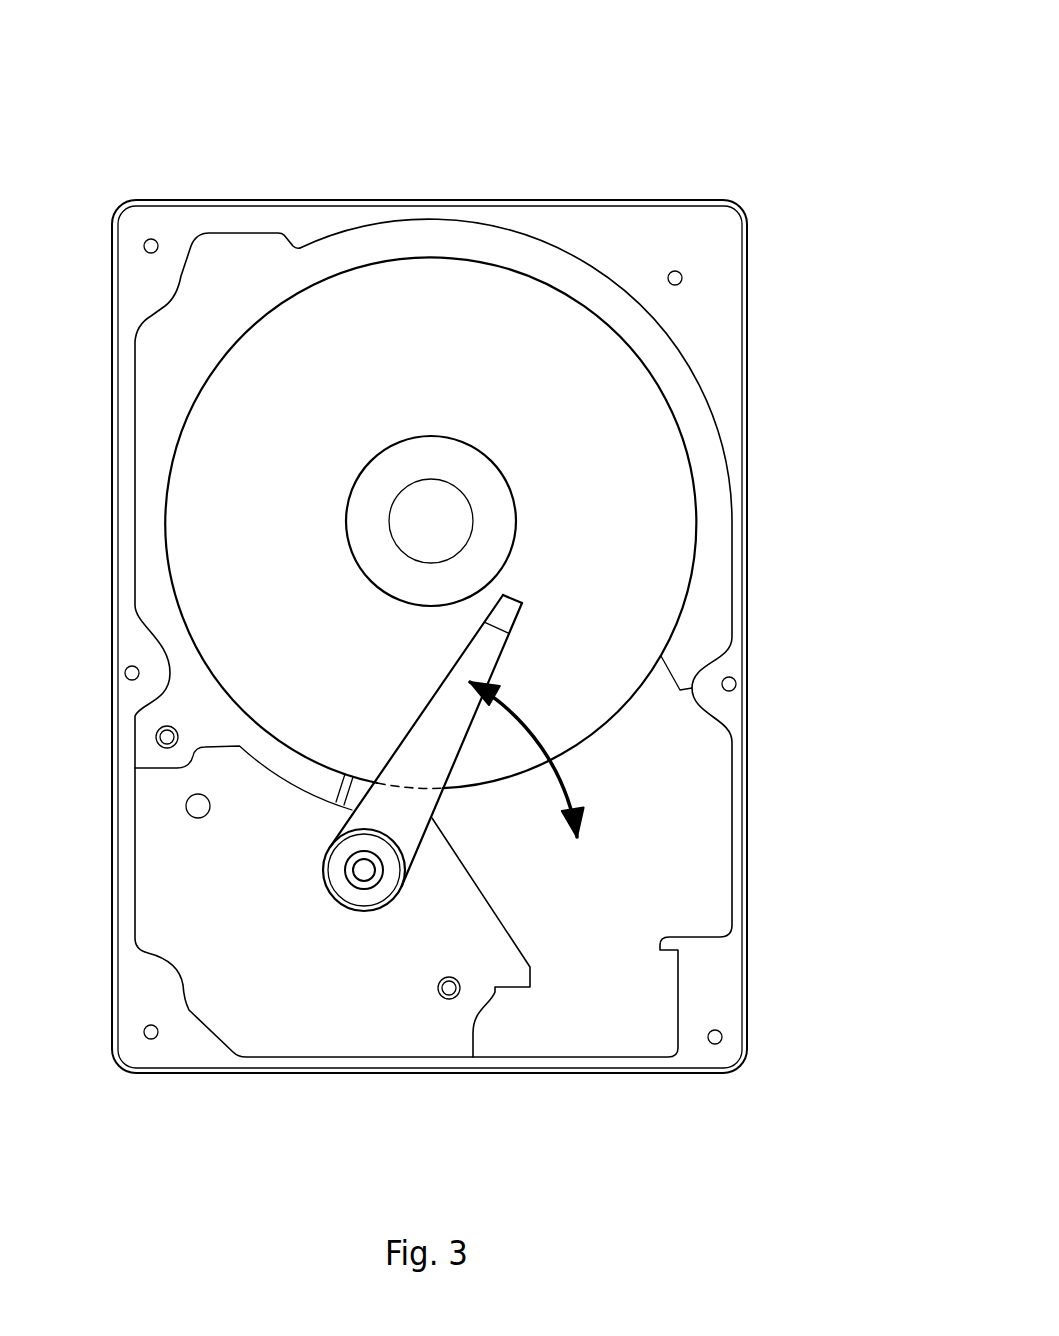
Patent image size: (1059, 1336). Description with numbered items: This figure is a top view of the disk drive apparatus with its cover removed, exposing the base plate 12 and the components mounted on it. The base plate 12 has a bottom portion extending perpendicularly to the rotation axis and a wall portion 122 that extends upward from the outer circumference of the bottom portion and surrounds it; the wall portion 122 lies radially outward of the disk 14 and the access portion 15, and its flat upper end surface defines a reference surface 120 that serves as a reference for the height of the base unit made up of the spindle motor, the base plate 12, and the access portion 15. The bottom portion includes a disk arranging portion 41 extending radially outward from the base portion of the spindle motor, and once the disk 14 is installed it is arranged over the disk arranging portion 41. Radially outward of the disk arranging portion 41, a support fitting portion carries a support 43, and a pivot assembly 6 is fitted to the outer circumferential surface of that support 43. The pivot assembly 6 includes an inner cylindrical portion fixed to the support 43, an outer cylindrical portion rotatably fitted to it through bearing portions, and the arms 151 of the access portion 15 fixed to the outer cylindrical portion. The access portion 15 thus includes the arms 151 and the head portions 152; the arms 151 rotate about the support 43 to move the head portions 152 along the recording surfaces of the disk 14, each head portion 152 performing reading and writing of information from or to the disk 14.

The base plate 12 is at (668, 140).
The reference surface 120 is at (603, 235).
The wall portion 122 is at (308, 222).
The disk 14 is at (417, 302).
The disk arranging portion 41 is at (662, 456).
The access portion 15 is at (825, 835).
The arms 151 is at (410, 803).
The head portions 152 is at (514, 620).
The pivot assembly 6 is at (338, 870).
The support 43 is at (364, 885).